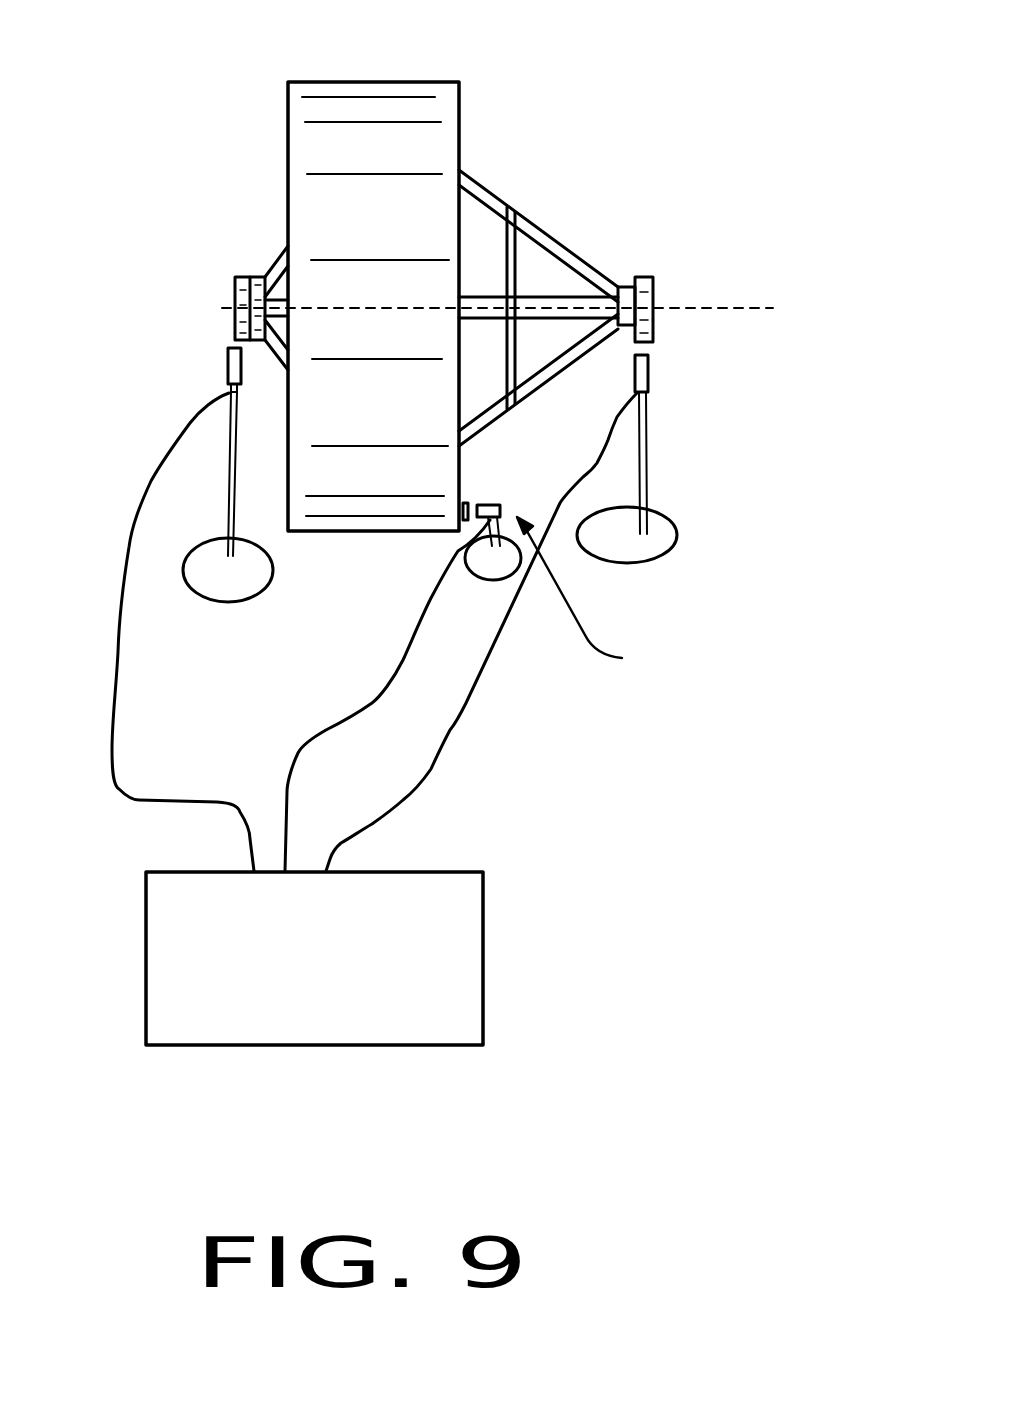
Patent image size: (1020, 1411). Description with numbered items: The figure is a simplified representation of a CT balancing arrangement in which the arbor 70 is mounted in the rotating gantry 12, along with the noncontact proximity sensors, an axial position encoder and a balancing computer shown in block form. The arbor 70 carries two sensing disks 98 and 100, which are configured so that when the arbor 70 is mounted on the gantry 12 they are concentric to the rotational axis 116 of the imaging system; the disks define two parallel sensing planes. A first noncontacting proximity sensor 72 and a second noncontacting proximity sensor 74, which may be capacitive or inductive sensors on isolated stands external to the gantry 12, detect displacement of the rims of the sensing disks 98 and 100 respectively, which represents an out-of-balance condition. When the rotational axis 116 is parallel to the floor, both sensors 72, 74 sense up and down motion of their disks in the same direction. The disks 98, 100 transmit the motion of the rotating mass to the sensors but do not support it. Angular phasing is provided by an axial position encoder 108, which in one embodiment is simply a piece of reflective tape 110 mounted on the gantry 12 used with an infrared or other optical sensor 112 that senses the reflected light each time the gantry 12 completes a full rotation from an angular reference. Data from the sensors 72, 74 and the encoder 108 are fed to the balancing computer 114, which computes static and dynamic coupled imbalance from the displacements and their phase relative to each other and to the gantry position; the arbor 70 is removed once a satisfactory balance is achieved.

The gantry 12 is at (400, 82).
The arbor 70 is at (523, 213).
The sensing disk 98 is at (245, 277).
The sensing disk 100 is at (648, 277).
The rotational axis 116 is at (532, 306).
The first noncontacting proximity sensor 72 is at (227, 362).
The second noncontacting proximity sensor 74 is at (650, 373).
The reflective tape 110 is at (465, 500).
The optical sensor 112 is at (488, 504).
The axial position encoder 108 is at (596, 597).
The balancing computer 114 is at (344, 928).